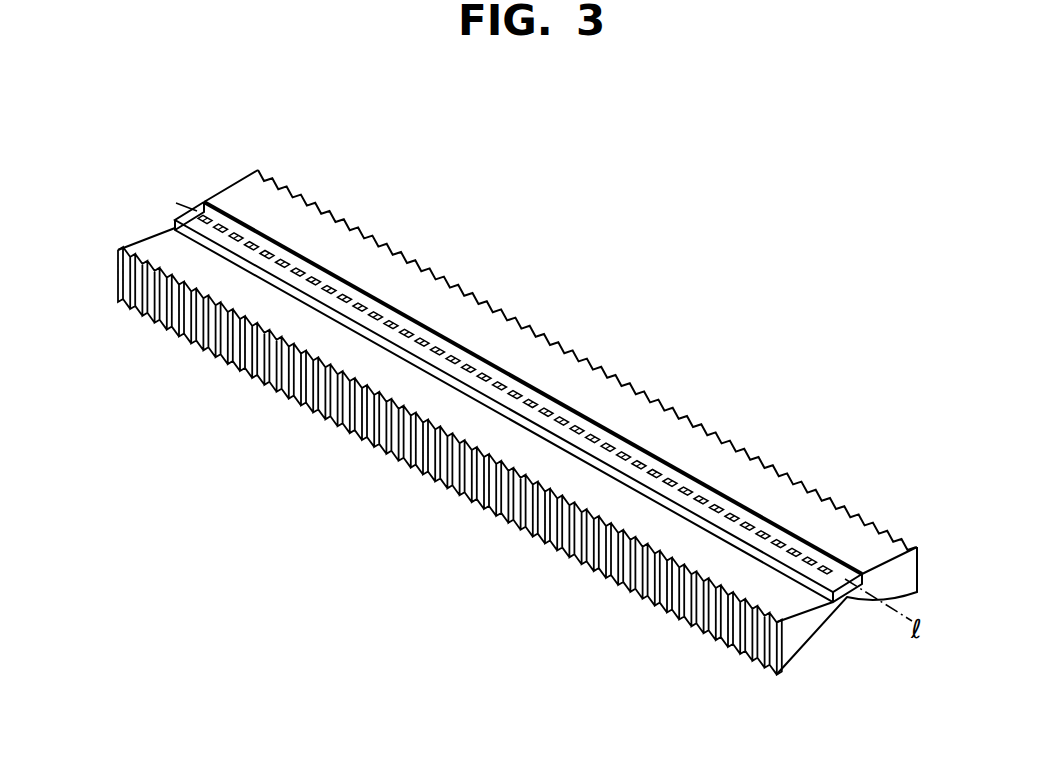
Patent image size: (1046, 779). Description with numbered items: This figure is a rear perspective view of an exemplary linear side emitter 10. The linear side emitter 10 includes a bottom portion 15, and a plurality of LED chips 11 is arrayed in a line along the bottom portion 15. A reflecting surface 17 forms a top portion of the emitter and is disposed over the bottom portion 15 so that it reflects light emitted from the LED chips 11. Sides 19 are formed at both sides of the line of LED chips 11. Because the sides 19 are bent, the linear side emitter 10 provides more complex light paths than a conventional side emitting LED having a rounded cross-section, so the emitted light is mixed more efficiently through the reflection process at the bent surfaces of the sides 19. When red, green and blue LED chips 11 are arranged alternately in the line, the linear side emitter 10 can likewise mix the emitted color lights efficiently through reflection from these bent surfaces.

The linear side emitter 10 is at (150, 193).
The LED chips 11 is at (229, 222).
The bottom portion 15 is at (441, 324).
The reflecting surface 17 is at (813, 647).
The sides 19 is at (692, 410).